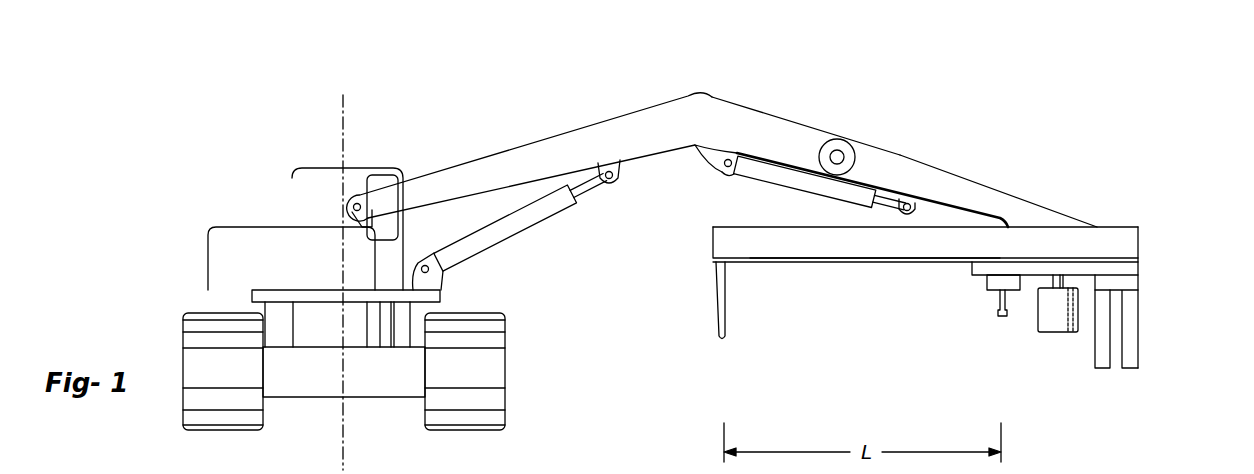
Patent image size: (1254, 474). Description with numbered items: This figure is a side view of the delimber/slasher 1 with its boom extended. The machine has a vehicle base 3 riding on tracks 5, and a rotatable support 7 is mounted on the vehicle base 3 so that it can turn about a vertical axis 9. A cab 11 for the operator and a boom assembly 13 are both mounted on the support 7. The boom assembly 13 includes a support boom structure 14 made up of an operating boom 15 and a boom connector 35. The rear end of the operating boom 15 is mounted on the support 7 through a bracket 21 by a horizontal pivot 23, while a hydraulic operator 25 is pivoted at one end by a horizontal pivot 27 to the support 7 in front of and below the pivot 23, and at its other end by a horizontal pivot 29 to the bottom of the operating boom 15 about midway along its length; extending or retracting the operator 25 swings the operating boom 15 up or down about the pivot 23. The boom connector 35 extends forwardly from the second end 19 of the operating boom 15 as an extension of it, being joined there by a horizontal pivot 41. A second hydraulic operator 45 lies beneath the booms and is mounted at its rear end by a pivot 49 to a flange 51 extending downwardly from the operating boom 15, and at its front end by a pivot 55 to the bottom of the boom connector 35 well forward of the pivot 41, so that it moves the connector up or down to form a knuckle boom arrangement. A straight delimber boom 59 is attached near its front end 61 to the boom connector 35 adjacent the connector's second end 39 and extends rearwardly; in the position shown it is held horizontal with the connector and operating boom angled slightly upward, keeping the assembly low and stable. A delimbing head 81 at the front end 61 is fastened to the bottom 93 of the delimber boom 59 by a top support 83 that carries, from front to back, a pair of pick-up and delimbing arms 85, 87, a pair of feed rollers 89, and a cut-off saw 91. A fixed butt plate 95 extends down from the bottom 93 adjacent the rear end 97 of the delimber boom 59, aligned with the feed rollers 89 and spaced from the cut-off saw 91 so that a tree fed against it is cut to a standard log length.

The delimber/slasher 1 is at (146, 145).
The vehicle base 3 is at (372, 390).
The tracks 5 is at (232, 422).
The rotatable support 7 is at (273, 298).
The vertical axis 9 is at (345, 112).
The cab 11 is at (296, 175).
The boom assembly 13 is at (469, 138).
The support boom structure 14 is at (904, 137).
The operating boom 15 is at (497, 155).
The second end of operating boom 19 is at (868, 156).
The bracket 21 is at (353, 218).
The horizontal pivot 23 is at (355, 207).
The hydraulic operator 25 is at (547, 205).
The horizontal pivot 27 is at (430, 270).
The horizontal pivot 29 is at (609, 168).
The boom connector 35 is at (886, 150).
The second end of boom connector 39 is at (1103, 226).
The horizontal pivot 41 is at (838, 150).
The second hydraulic operator 45 is at (812, 182).
The pivot 49 is at (727, 158).
The flange 51 is at (695, 143).
The pivot 55 is at (910, 204).
The delimber boom 59 is at (833, 272).
The front end of delimber boom 61 is at (1140, 242).
The delimbing head 81 is at (1160, 287).
The top support 83 is at (970, 271).
The pick-up and delimbing arm 85 is at (1126, 348).
The pick-up and delimbing arm 87 is at (1102, 347).
The feed rollers 89 is at (1053, 327).
The cut-off saw 91 is at (1002, 316).
The bottom of delimber boom 93 is at (870, 262).
The butt plate 95 is at (715, 288).
The rear end of delimber boom 97 is at (713, 245).